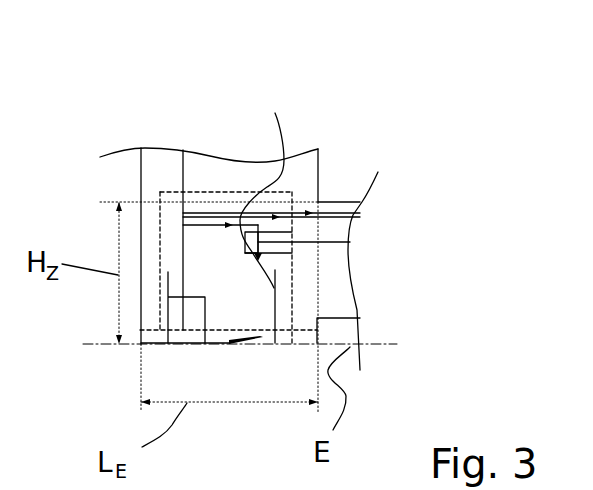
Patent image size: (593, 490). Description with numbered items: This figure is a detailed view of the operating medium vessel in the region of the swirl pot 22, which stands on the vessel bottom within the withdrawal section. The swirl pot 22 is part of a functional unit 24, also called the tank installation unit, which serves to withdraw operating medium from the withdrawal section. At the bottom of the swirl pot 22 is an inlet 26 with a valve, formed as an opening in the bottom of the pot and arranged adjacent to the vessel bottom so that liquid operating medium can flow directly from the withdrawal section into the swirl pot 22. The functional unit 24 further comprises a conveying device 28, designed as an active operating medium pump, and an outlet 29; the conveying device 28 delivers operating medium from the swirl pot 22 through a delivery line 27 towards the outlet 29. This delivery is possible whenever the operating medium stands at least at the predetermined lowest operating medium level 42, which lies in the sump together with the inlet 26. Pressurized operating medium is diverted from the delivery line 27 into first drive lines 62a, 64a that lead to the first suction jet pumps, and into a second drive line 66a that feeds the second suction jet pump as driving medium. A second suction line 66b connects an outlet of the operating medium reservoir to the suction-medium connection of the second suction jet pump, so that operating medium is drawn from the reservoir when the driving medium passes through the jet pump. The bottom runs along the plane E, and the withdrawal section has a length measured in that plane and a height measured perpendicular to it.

The swirl pot 22 is at (276, 313).
The functional unit 24 is at (293, 270).
The inlet 26 is at (263, 338).
The delivery line 27 is at (182, 237).
The conveying device 28 is at (190, 296).
The outlet 29 is at (182, 192).
The lowest operating medium level 42 is at (277, 345).
The first drive line 62a is at (341, 215).
The first drive line 64a is at (320, 213).
The second drive line 66a is at (227, 220).
The second suction line 66b is at (335, 242).